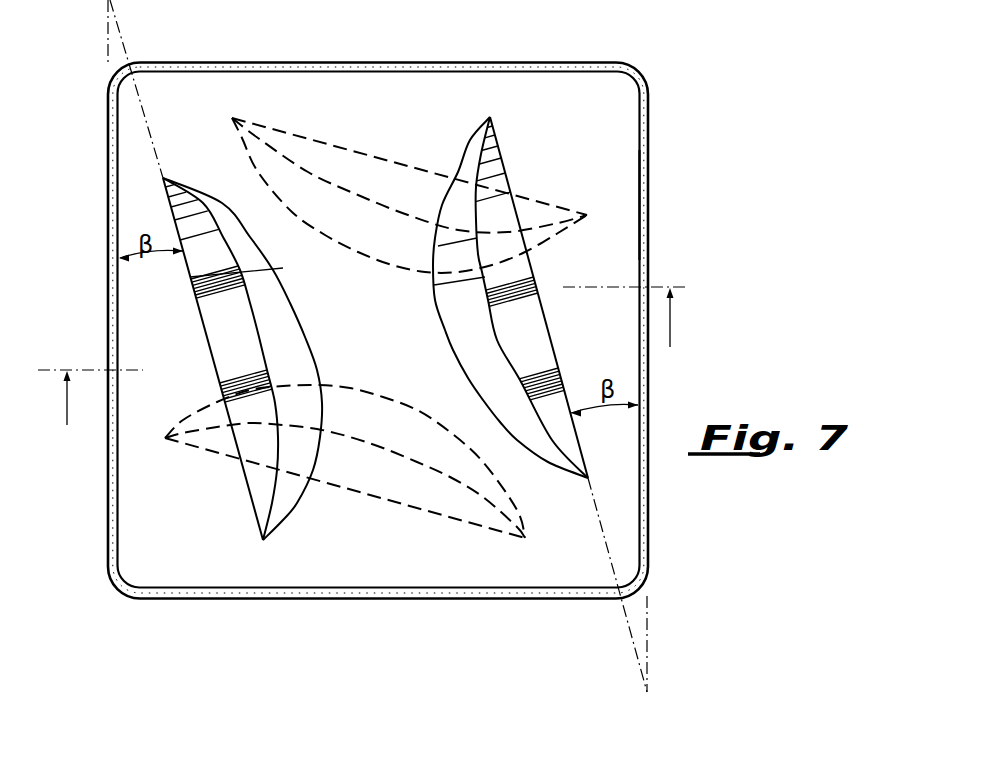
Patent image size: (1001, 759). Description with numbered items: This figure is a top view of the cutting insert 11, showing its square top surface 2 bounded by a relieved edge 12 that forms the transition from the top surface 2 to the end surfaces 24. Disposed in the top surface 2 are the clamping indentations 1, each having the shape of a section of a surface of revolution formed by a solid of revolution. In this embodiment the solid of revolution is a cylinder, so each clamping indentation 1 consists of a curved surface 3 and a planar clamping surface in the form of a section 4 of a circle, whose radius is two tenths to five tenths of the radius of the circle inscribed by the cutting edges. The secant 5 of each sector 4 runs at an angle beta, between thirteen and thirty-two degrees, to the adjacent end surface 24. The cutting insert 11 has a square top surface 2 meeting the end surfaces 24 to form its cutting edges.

The clamping indentation 1 is at (339, 182).
The top surface 2 is at (472, 612).
The curved surface 3 is at (250, 260).
The section of a circle 4 is at (221, 330).
The secant 5 is at (228, 412).
The cutting insert 11 is at (652, 545).
The relieved edge 12 is at (344, 61).
The end surface 24 is at (650, 202).